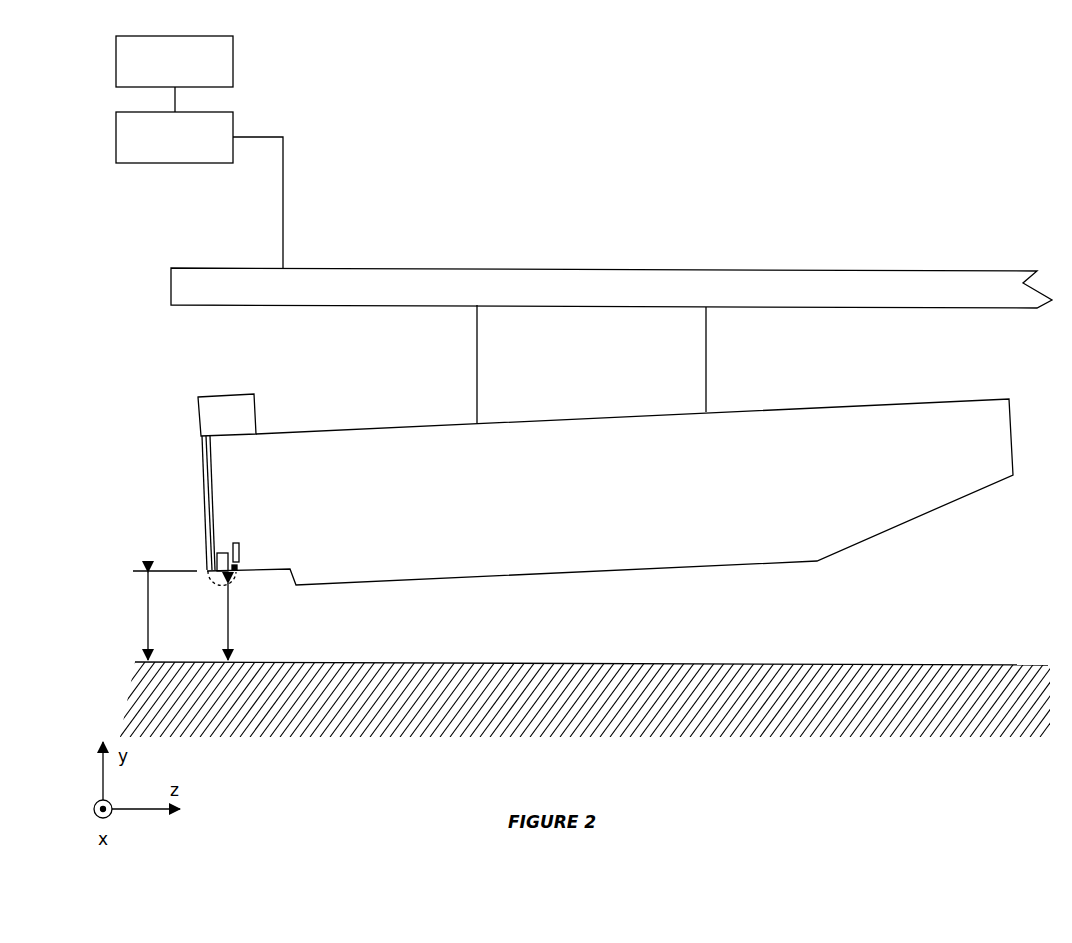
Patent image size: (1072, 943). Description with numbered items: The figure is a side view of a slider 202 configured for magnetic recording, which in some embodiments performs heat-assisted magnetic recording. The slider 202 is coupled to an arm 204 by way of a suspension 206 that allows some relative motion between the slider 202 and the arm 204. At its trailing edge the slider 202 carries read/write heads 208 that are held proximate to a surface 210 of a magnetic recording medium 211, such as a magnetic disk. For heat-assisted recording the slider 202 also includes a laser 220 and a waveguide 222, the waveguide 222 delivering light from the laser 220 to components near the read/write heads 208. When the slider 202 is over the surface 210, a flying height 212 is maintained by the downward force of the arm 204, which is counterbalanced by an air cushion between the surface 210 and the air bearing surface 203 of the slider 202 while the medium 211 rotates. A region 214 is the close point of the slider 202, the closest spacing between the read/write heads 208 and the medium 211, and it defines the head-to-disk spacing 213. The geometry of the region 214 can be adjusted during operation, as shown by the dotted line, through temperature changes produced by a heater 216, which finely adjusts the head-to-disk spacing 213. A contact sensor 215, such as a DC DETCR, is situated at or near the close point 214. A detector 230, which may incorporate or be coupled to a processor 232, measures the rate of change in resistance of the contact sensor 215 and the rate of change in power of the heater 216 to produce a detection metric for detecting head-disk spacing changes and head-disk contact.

The slider 202 is at (876, 413).
The air bearing surface 203 is at (422, 582).
The arm 204 is at (942, 282).
The suspension 206 is at (706, 357).
The read/write heads 208 is at (215, 548).
The surface 210 is at (880, 663).
The magnetic recording medium 211 is at (897, 720).
The flying height 212 is at (152, 615).
The head-to-disk spacing 213 is at (210, 621).
The region 214 is at (237, 578).
The contact sensor 215 is at (238, 566).
The heater 216 is at (232, 548).
The laser 220 is at (226, 406).
The waveguide 222 is at (208, 470).
The detector 230 is at (116, 136).
The processor 232 is at (116, 60).